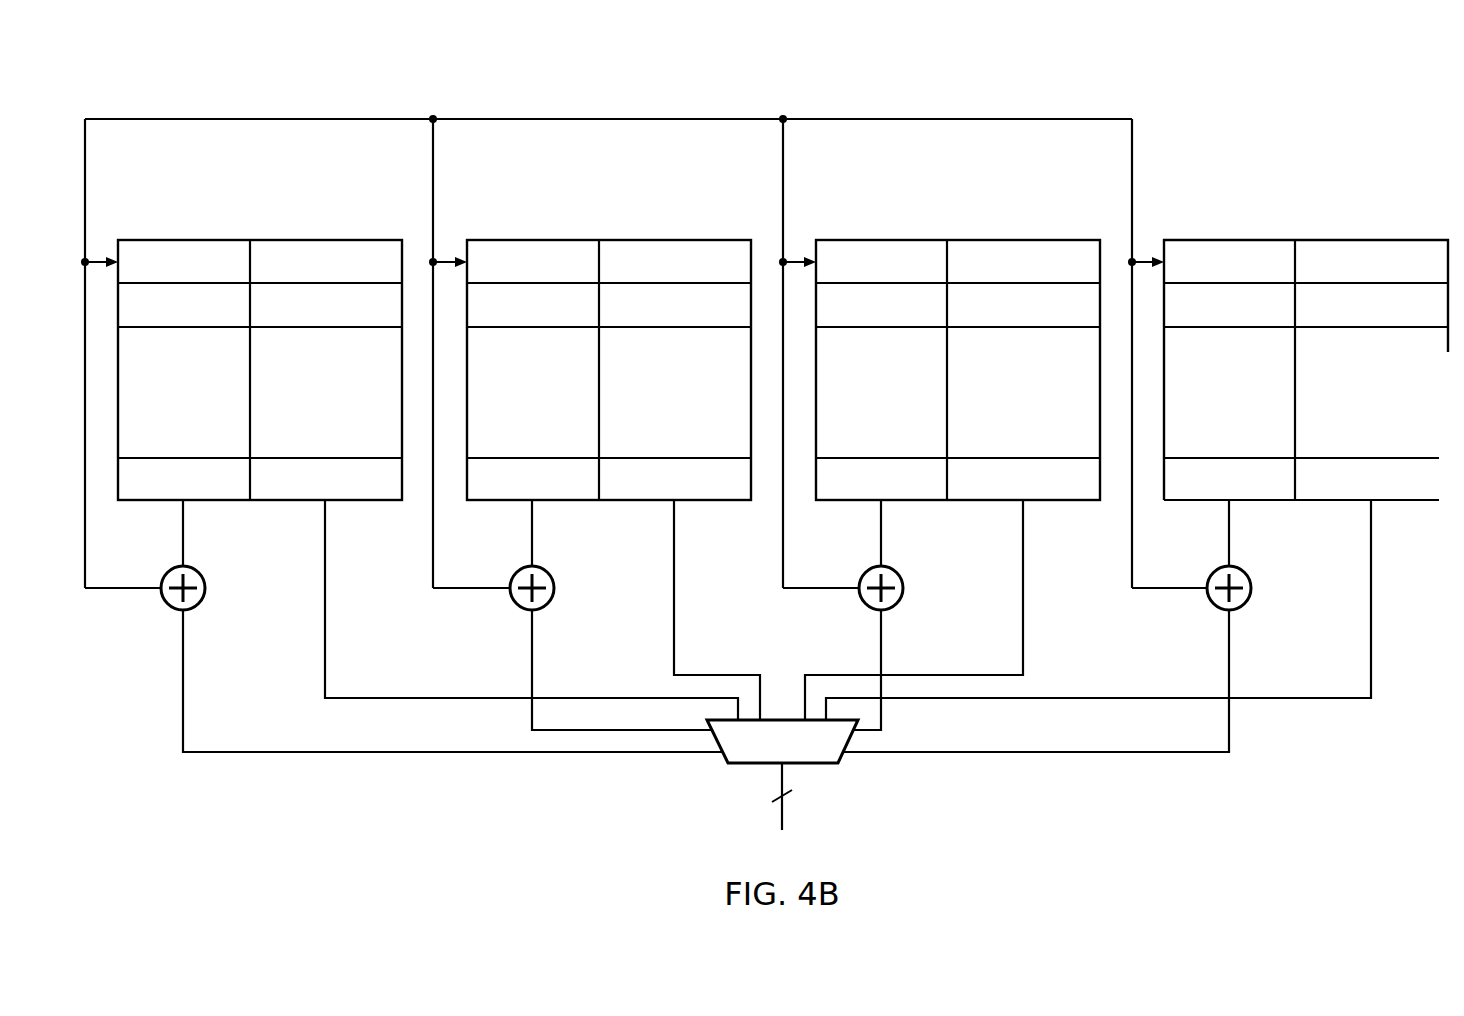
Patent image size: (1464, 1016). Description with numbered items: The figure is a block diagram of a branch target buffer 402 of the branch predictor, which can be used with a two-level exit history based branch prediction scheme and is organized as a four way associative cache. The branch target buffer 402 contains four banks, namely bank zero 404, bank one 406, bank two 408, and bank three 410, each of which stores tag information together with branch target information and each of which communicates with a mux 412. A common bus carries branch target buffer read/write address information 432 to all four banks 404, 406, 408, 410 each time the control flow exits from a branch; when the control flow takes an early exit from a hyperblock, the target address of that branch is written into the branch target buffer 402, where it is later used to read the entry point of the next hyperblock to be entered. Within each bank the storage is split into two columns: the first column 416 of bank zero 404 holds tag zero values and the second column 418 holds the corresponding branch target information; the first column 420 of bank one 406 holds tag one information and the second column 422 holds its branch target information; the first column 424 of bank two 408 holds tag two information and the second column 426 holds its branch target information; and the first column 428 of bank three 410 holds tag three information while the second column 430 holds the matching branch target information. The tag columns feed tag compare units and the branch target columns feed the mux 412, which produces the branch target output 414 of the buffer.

The branch target buffer 402 is at (1084, 84).
The bank 0 404 is at (224, 230).
The bank 1 406 is at (573, 230).
The bank 2 408 is at (982, 230).
The bank 3 410 is at (1333, 230).
The mux 412 is at (750, 766).
The BT output 414 is at (782, 805).
The first column of bank 0 416 is at (181, 250).
The second column of bank 0 418 is at (325, 250).
The first column of bank 1 420 is at (530, 250).
The second column of bank 1 422 is at (674, 250).
The first column of bank 2 424 is at (882, 250).
The second column of bank 2 426 is at (1024, 250).
The first column of bank 3 428 is at (1230, 250).
The second column of bank 3 430 is at (1372, 250).
The branch target buffer read/write address information 432 is at (608, 119).